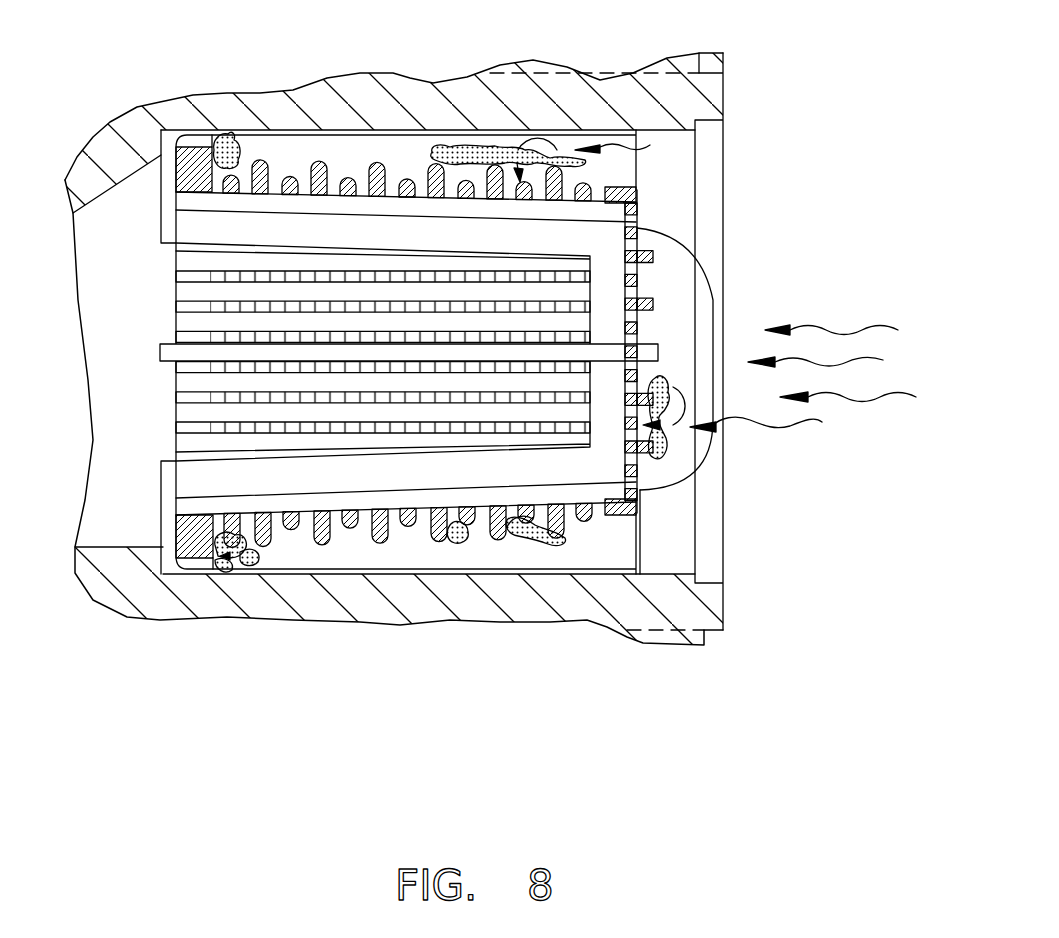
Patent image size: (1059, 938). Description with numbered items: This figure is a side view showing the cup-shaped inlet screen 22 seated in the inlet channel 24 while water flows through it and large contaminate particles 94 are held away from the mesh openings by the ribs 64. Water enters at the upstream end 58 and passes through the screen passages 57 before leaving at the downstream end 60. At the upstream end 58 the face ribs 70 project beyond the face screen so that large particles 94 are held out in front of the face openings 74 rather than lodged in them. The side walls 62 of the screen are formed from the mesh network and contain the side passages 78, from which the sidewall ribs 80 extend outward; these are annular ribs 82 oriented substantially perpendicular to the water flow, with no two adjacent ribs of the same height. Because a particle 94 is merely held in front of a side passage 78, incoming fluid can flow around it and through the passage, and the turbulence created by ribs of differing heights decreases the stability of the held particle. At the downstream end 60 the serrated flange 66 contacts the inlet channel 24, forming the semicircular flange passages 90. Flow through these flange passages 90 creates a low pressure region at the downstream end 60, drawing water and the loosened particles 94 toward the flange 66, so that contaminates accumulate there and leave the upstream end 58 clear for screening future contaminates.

The inlet screen 22 is at (568, 690).
The inlet channel 24 is at (389, 588).
The screen passages 57 is at (383, 487).
The upstream end 58 is at (775, 235).
The downstream end 60 is at (136, 352).
The side walls 62 is at (461, 586).
The ribs 64 is at (323, 546).
The serrated flange 66 is at (197, 562).
The face ribs 70 is at (653, 252).
The face openings 74 is at (637, 245).
The side passages 78 is at (276, 368).
The sidewall ribs 80 is at (407, 467).
The annular ribs 82 is at (408, 649).
The flange passages 90 is at (205, 567).
The contaminate particles 94 is at (446, 148).